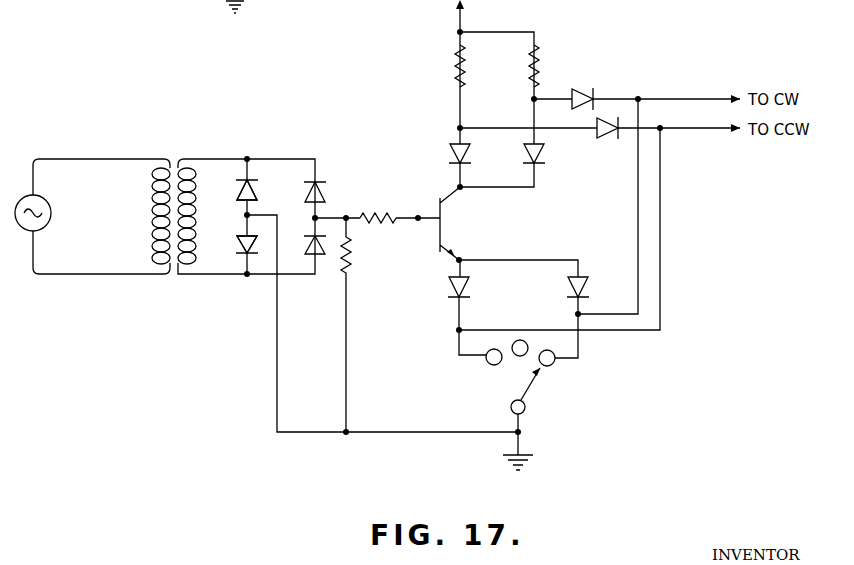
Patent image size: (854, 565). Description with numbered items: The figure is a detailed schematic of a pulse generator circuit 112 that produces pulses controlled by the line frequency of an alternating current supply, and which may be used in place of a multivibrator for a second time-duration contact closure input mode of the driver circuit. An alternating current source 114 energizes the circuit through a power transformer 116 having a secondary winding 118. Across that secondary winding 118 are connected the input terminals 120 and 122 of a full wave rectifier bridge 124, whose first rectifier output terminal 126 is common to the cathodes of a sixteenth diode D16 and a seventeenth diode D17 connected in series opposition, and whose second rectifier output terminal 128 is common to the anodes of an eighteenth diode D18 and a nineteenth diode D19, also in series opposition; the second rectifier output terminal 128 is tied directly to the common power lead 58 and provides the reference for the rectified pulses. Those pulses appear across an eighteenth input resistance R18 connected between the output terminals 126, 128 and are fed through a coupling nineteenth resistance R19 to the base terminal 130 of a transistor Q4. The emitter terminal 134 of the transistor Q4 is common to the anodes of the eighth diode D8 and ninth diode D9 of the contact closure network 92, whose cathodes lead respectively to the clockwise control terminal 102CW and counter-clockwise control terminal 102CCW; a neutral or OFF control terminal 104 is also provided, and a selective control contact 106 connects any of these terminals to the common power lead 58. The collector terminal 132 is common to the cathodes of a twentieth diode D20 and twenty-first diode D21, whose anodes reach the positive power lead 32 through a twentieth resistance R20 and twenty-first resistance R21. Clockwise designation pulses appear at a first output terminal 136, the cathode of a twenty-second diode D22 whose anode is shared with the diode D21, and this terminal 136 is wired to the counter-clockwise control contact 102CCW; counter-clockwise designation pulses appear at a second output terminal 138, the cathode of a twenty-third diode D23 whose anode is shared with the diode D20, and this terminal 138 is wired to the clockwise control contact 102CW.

The alternating current source 114 is at (50, 205).
The power transformer 116 is at (160, 149).
The secondary winding 118 is at (190, 176).
The input terminal 120 is at (250, 156).
The input terminal 122 is at (247, 278).
The full wave rectifier bridge 124 is at (292, 211).
The first rectifier output terminal 126 is at (322, 216).
The second rectifier output terminal 128 is at (244, 215).
The pulse generator circuit 112 is at (356, 129).
The base terminal 130 is at (419, 214).
The collector terminal 132 is at (463, 185).
The emitter terminal 134 is at (462, 258).
The first output terminal 136 is at (640, 97).
The second output terminal 138 is at (661, 132).
The positive power lead 32 is at (457, 33).
The common power lead 58 is at (521, 431).
The contact closure network 92 is at (527, 297).
The neutral or OFF control terminal 104 is at (521, 339).
The selective control contact 106 is at (529, 390).
The clockwise control terminal 102CW is at (489, 365).
The counter-clockwise control terminal 102CCW is at (555, 354).
The transistor Q4 is at (446, 222).
The eighteenth input resistance R18 is at (351, 254).
The coupling nineteenth resistance R19 is at (397, 214).
The twentieth resistance R20 is at (455, 68).
The twenty-first resistance R21 is at (538, 46).
The eighth diode D8 is at (450, 287).
The ninth diode D9 is at (588, 285).
The sixteenth diode D16 is at (325, 189).
The seventeenth diode D17 is at (306, 246).
The eighteenth diode D18 is at (255, 192).
The nineteenth diode D19 is at (239, 244).
The twentieth diode D20 is at (452, 155).
The twenty-first diode D21 is at (530, 153).
The twenty-second diode D22 is at (586, 92).
The twenty-third diode D23 is at (614, 137).